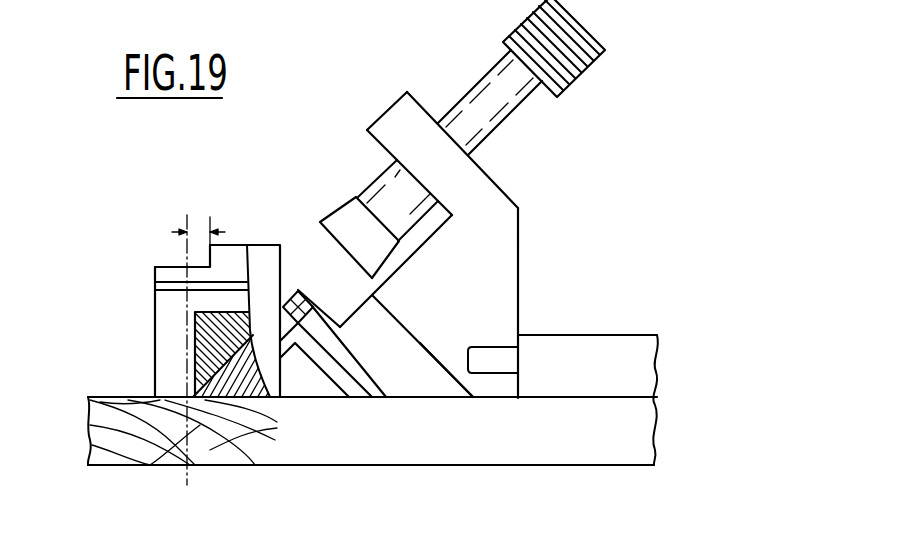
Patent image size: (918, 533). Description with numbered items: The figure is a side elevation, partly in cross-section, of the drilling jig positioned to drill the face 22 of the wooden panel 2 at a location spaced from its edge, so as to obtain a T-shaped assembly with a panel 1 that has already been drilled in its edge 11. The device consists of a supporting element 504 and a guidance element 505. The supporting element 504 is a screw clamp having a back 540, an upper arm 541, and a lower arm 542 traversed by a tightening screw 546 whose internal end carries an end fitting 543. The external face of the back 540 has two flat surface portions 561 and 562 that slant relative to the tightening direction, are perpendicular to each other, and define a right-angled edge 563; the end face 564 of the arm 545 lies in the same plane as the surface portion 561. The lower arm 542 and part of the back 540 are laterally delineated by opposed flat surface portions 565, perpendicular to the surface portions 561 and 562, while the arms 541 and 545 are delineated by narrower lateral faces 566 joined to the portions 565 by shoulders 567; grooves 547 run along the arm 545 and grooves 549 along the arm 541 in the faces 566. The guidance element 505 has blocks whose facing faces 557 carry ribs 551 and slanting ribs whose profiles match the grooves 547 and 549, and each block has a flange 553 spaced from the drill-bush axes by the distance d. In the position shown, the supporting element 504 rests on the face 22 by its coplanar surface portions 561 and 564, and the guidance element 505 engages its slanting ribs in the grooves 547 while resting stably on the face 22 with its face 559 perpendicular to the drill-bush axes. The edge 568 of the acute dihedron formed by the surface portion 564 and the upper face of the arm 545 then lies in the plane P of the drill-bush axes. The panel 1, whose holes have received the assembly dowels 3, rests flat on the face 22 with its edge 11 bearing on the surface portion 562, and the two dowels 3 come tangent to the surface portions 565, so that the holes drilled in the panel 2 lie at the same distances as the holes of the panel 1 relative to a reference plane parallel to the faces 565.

The panel 1 is at (622, 356).
The wooden panel 2 is at (612, 437).
The assembly dowels 3 is at (486, 358).
The edge of the panel 11 is at (516, 381).
The upper face of the panel 22 is at (117, 397).
The supporting element 504 is at (522, 249).
The guidance element 505 is at (154, 322).
The back 540 is at (378, 316).
The upper arm 541 is at (358, 390).
The lower arm 542 is at (395, 118).
The end fitting 543 is at (342, 215).
The arm 545 is at (223, 390).
The tightening screw 546 is at (480, 90).
The grooves 547 is at (298, 290).
The grooves 549 is at (337, 389).
The rib 551 is at (160, 287).
The flange 553 is at (181, 257).
The faces 557 is at (227, 257).
The face 559 is at (128, 462).
The flat surface portion 561 is at (403, 398).
The flat surface portion 562 is at (521, 222).
The right-angled edge 563 is at (517, 398).
The end face 564 is at (250, 400).
The flat surface portions 565 is at (495, 286).
The surface portions 566 is at (437, 387).
The shoulders 567 is at (409, 337).
The edge 568 is at (185, 395).
The plane P is at (180, 470).
The distance d is at (198, 227).